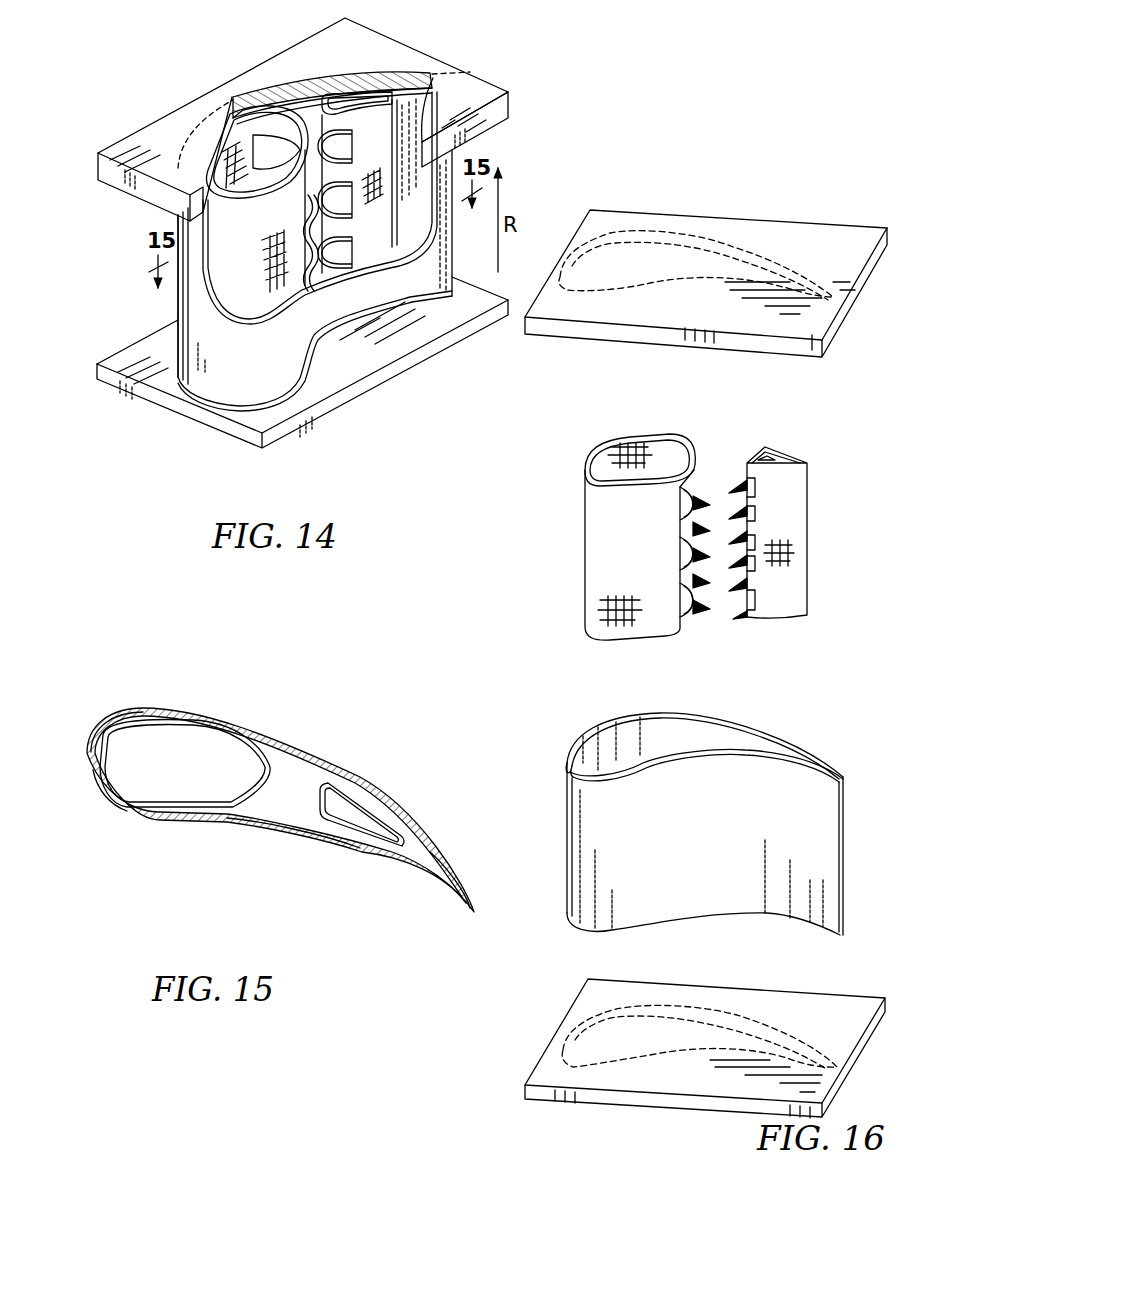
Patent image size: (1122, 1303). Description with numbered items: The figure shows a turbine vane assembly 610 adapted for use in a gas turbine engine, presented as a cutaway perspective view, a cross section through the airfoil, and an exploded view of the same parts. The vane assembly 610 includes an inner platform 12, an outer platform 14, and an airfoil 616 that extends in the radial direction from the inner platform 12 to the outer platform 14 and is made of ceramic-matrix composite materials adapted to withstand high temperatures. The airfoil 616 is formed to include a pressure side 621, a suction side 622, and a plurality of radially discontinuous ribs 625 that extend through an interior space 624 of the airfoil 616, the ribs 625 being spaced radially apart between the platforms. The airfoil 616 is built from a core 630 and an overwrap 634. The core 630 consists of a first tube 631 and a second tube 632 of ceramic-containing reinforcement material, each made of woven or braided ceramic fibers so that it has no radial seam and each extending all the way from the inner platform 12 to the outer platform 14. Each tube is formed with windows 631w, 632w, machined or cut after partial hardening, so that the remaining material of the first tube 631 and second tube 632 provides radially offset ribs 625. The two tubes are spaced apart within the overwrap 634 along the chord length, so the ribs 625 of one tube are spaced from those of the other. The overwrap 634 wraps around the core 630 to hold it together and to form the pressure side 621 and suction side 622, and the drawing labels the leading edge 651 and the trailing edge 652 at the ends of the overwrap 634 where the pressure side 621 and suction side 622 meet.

In FIG. 14, the inner platform 12 is at (255, 433).
In FIG. 16, the inner platform 12 is at (560, 1078).
In FIG. 14, the outer platform 14 is at (122, 172).
In FIG. 16, the outer platform 14 is at (619, 224).
In FIG. 14, the turbine vane assembly 610 is at (148, 118).
In FIG. 16, the turbine vane assembly 610 is at (654, 176).
In FIG. 14, the airfoil 616 is at (166, 294).
In FIG. 15, the airfoil 616 is at (137, 687).
In FIG. 16, the airfoil 616 is at (478, 638).
In FIG. 14, the pressure side 621 is at (307, 330).
In FIG. 15, the pressure side 621 is at (292, 818).
In FIG. 16, the pressure side 621 is at (710, 901).
In FIG. 14, the suction side 622 is at (200, 272).
In FIG. 15, the suction side 622 is at (276, 740).
In FIG. 16, the suction side 622 is at (748, 726).
In FIG. 15, the interior space 624 is at (207, 752).
In FIG. 16, the interior space 624 is at (703, 742).
In FIG. 14, the radially discontinuous ribs 625 is at (318, 110).
In FIG. 15, the radially discontinuous ribs 625 is at (246, 781).
In FIG. 16, the radially discontinuous ribs 625 is at (745, 470).
In FIG. 14, the core 630 is at (279, 292).
In FIG. 15, the core 630 is at (161, 822).
In FIG. 16, the core 630 is at (496, 553).
In FIG. 14, the first tube 631 is at (236, 155).
In FIG. 15, the first tube 631 is at (183, 797).
In FIG. 16, the first tube 631 is at (642, 432).
In FIG. 16, the windows 631w is at (680, 508).
In FIG. 14, the second tube 632 is at (340, 92).
In FIG. 15, the second tube 632 is at (357, 810).
In FIG. 16, the second tube 632 is at (786, 447).
In FIG. 16, the windows 632w is at (755, 483).
In FIG. 14, the overwrap 634 is at (216, 370).
In FIG. 15, the overwrap 634 is at (113, 820).
In FIG. 16, the overwrap 634 is at (598, 725).
In FIG. 14, the leading edge 651 is at (190, 380).
In FIG. 15, the leading edge 651 is at (78, 752).
In FIG. 16, the leading edge 651 is at (565, 835).
In FIG. 14, the trailing edge 652 is at (450, 270).
In FIG. 15, the trailing edge 652 is at (477, 912).
In FIG. 16, the trailing edge 652 is at (845, 836).